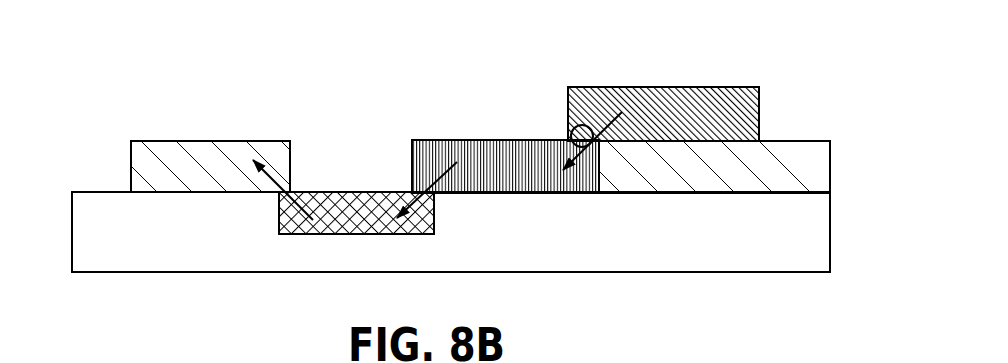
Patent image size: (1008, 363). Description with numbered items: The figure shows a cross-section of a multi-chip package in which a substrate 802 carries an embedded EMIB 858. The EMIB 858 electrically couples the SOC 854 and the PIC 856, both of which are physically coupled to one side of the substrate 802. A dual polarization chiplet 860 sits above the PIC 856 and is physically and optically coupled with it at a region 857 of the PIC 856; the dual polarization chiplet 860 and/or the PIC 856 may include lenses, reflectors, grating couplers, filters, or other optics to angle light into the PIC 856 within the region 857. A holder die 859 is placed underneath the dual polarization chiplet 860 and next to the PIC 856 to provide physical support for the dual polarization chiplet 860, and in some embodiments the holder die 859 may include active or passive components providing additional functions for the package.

The substrate 802 is at (782, 260).
The SOC 854 is at (177, 160).
The PIC 856 is at (473, 167).
The region 857 is at (590, 126).
The EMIB 858 is at (340, 196).
The holder die 859 is at (828, 165).
The dual polarization chiplet 860 is at (652, 140).